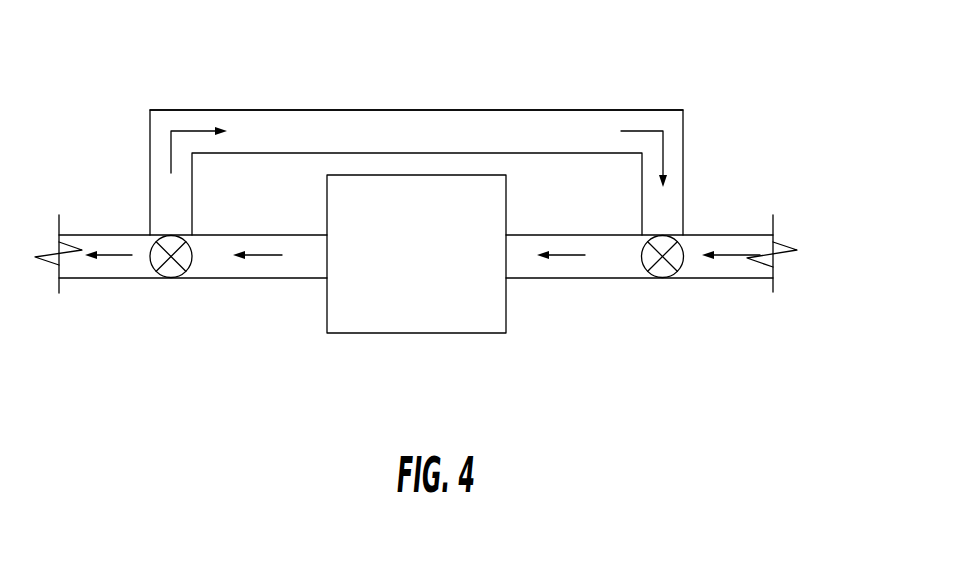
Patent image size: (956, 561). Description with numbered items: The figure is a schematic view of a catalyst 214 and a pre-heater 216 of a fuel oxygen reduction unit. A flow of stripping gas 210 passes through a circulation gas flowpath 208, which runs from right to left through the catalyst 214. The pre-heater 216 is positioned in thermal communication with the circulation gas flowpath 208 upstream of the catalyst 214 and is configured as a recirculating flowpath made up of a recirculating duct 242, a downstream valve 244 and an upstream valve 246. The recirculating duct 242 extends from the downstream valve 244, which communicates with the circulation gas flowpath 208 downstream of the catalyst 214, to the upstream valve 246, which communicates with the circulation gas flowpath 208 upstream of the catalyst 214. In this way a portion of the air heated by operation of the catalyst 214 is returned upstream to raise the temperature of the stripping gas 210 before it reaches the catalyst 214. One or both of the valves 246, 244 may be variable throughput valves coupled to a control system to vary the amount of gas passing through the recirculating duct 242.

The circulation gas flowpath 208 is at (127, 283).
The stripping gas 210 is at (260, 257).
The catalyst 214 is at (417, 333).
The pre-heater 216 is at (603, 85).
The recirculating duct 242 is at (405, 110).
The downstream valve 244 is at (168, 278).
The upstream valve 246 is at (662, 278).